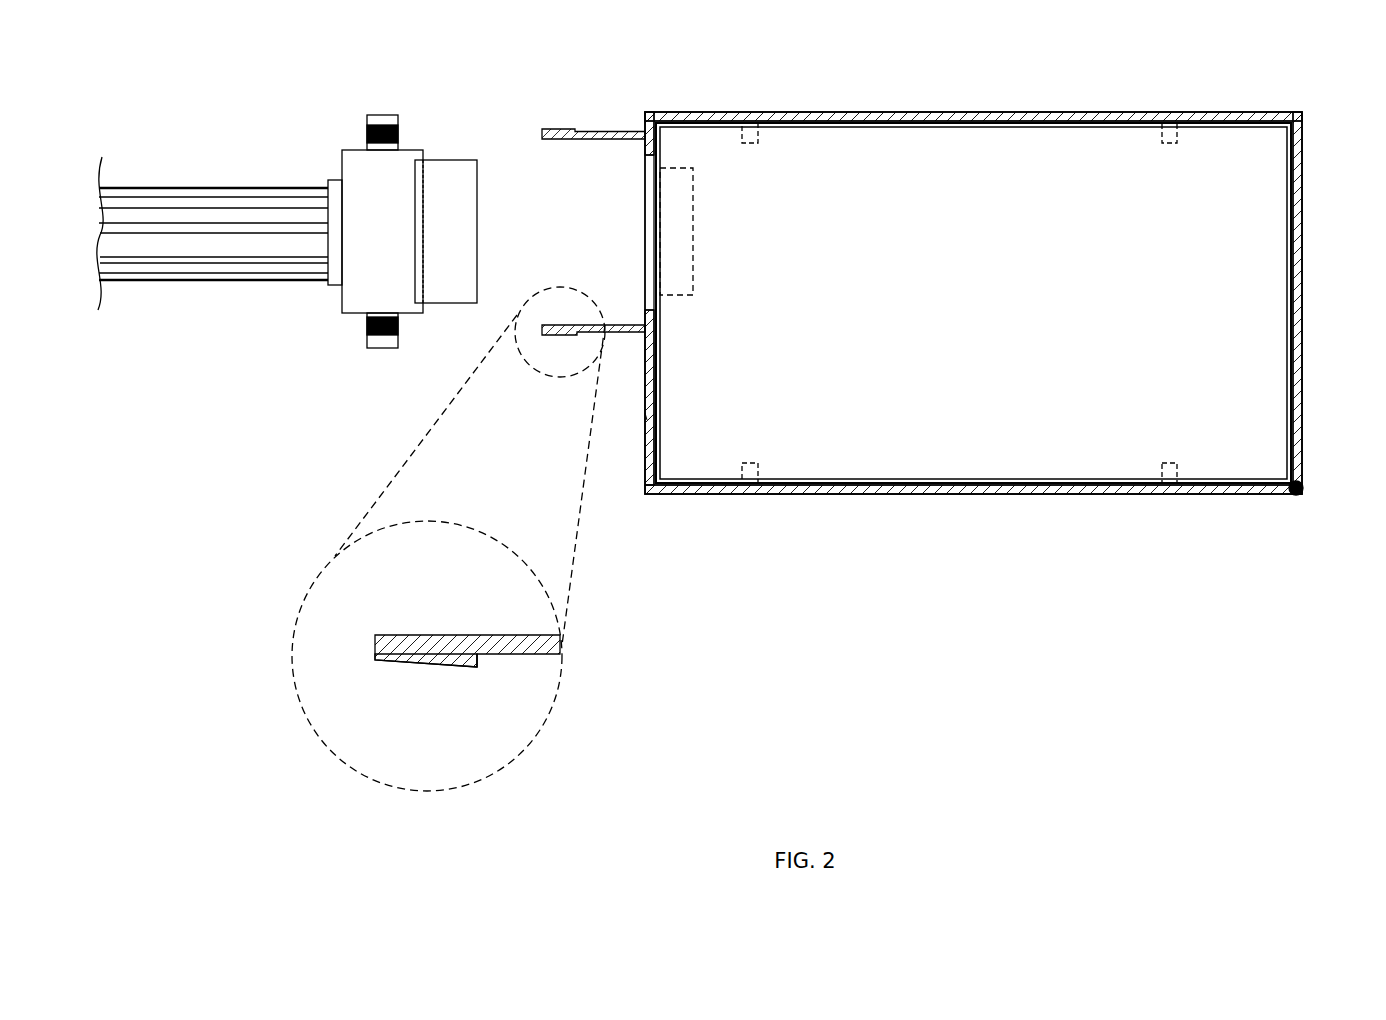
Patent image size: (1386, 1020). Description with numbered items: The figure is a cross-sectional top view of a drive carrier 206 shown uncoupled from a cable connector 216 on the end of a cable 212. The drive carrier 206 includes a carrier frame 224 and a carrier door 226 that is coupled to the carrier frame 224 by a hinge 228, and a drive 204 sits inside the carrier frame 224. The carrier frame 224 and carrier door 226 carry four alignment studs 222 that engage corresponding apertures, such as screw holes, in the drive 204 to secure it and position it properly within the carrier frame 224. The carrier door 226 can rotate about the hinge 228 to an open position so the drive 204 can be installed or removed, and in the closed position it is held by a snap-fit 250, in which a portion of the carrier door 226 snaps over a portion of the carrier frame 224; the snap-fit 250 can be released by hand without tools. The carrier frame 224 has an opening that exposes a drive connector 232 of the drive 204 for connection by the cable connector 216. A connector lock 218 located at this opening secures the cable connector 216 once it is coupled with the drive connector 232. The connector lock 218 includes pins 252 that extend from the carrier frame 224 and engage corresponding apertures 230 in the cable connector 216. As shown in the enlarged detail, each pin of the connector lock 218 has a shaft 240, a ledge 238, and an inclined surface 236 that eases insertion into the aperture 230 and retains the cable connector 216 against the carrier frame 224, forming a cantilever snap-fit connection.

The drive 204 is at (987, 305).
The drive carrier 206 is at (863, 111).
The cable 212 is at (213, 182).
The cable connector 216 is at (380, 349).
The connector lock 218 is at (453, 404).
The alignment studs 222 is at (1178, 137).
The carrier frame 224 is at (1303, 268).
The carrier door 226 is at (912, 495).
The hinge 228 is at (1298, 496).
The apertures 230 is at (399, 133).
The drive connector 232 is at (680, 168).
The inclined surface 236 is at (427, 668).
The ledge 238 is at (480, 660).
The shaft 240 is at (490, 634).
The snap-fit 250 is at (642, 478).
The pins 252 is at (556, 128).